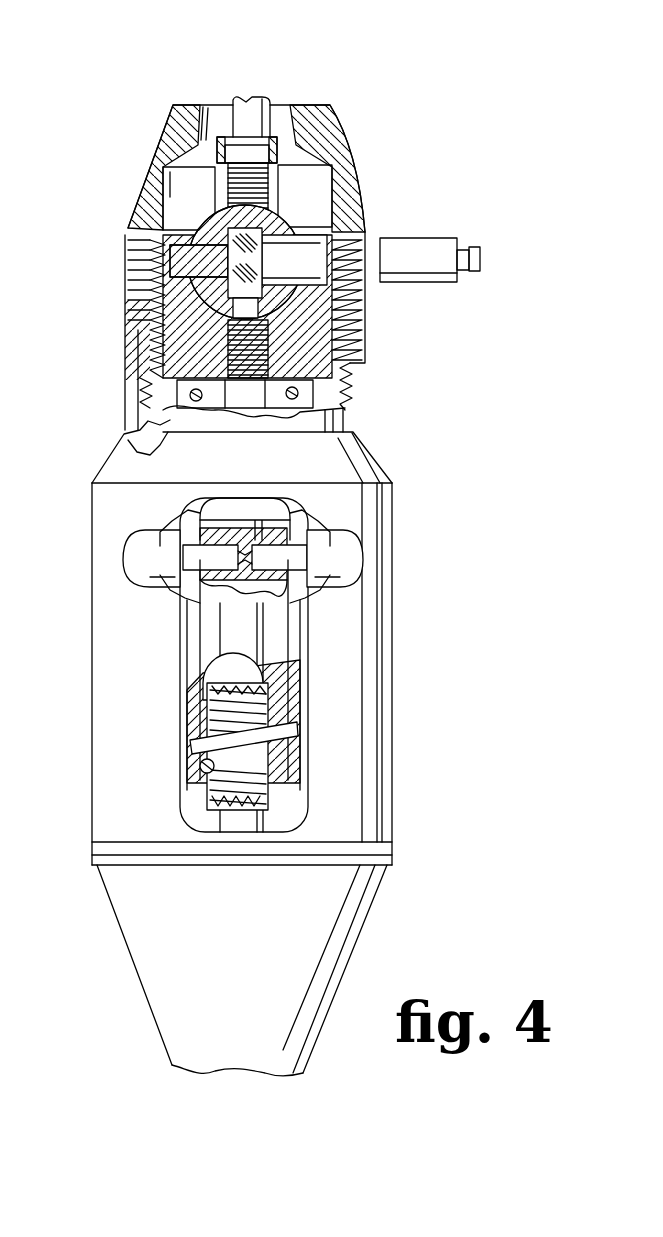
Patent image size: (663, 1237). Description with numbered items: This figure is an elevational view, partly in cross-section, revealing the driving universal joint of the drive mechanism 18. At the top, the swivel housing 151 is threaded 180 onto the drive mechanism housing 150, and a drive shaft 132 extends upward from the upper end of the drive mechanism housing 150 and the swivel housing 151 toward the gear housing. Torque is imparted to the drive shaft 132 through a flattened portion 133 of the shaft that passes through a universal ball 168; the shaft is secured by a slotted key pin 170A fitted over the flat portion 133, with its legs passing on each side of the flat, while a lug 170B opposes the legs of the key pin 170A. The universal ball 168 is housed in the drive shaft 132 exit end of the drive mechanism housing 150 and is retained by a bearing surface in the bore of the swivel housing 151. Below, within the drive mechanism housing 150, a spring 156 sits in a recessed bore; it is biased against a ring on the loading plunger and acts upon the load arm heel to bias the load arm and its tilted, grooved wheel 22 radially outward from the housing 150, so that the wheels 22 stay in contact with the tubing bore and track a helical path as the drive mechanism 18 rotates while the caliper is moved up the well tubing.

The drive mechanism 18 is at (393, 779).
The tilted grooved wheel 22 is at (277, 713).
The drive shaft 132 is at (248, 118).
The flattened portion of the drive shaft 133 is at (303, 228).
The drive mechanism housing 150 is at (380, 457).
The swivel housing 151 is at (333, 127).
The spring 156 is at (330, 400).
The universal ball 168 is at (260, 260).
The slotted key pin 170A is at (432, 252).
The lug 170B is at (123, 243).
The threaded connection 180 is at (363, 333).